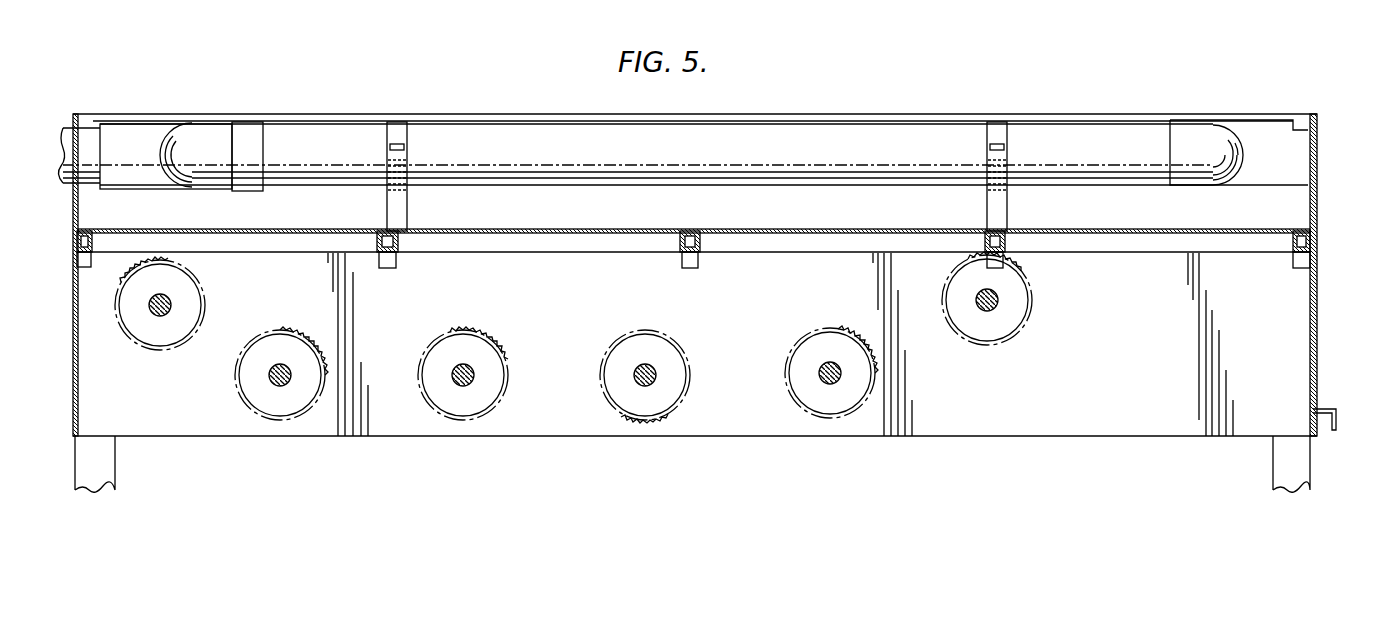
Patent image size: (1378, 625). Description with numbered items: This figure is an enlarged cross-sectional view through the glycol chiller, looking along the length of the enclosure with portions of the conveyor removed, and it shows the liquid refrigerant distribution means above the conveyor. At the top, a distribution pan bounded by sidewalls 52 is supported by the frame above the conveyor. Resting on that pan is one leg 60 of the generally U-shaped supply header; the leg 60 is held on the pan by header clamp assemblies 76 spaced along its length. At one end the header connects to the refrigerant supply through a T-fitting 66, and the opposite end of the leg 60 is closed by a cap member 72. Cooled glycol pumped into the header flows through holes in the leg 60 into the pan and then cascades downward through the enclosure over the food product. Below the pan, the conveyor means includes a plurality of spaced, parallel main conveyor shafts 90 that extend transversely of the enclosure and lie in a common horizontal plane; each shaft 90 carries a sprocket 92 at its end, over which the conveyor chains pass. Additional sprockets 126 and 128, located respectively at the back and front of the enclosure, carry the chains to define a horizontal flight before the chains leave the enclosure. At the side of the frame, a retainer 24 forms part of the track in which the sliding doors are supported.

The retainer 24 is at (1333, 408).
The sidewall 52 is at (80, 208).
The leg 60 is at (732, 133).
The T-fitting 66 is at (143, 142).
The cap member 72 is at (1213, 135).
The header clamp assembly 76 is at (412, 160).
The main conveyor shaft 90 is at (463, 367).
The sprocket 92 is at (300, 310).
The sprocket 126 is at (1017, 309).
The sprocket 128 is at (152, 348).